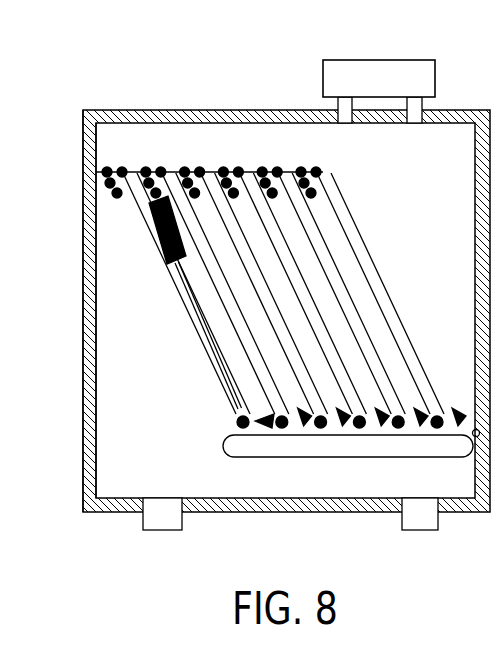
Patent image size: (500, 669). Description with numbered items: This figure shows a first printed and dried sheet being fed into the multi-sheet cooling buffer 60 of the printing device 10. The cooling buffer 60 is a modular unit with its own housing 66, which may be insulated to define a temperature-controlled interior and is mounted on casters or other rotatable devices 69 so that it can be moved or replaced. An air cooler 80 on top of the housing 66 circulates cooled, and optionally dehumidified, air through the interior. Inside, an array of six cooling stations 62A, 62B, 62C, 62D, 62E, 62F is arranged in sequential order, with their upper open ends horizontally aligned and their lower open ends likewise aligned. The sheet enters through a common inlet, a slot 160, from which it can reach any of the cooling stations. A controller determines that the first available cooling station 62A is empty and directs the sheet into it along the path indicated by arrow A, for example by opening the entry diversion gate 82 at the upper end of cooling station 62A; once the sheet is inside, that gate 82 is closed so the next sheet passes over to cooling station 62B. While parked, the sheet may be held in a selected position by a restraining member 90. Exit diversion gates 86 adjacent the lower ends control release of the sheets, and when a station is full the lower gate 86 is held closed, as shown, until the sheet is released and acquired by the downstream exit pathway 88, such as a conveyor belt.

The printing device 10 is at (484, 470).
The multi-sheet cooling buffer 60 is at (185, 48).
The cooling station 62A is at (114, 168).
The cooling station 62B is at (152, 168).
The cooling station 62C is at (191, 168).
The cooling station 62D is at (230, 168).
The cooling station 62E is at (269, 168).
The cooling station 62F is at (308, 168).
The housing 66 is at (300, 110).
The rotatable devices 69 is at (420, 530).
The air cooler 80 is at (437, 63).
The entry diversion gate 82 is at (141, 166).
The exit diversion gate 86 is at (256, 418).
The exit pathway 88 is at (223, 446).
The restraining member 90 is at (195, 296).
The slot 160 is at (83, 149).
The path arrow A is at (172, 258).